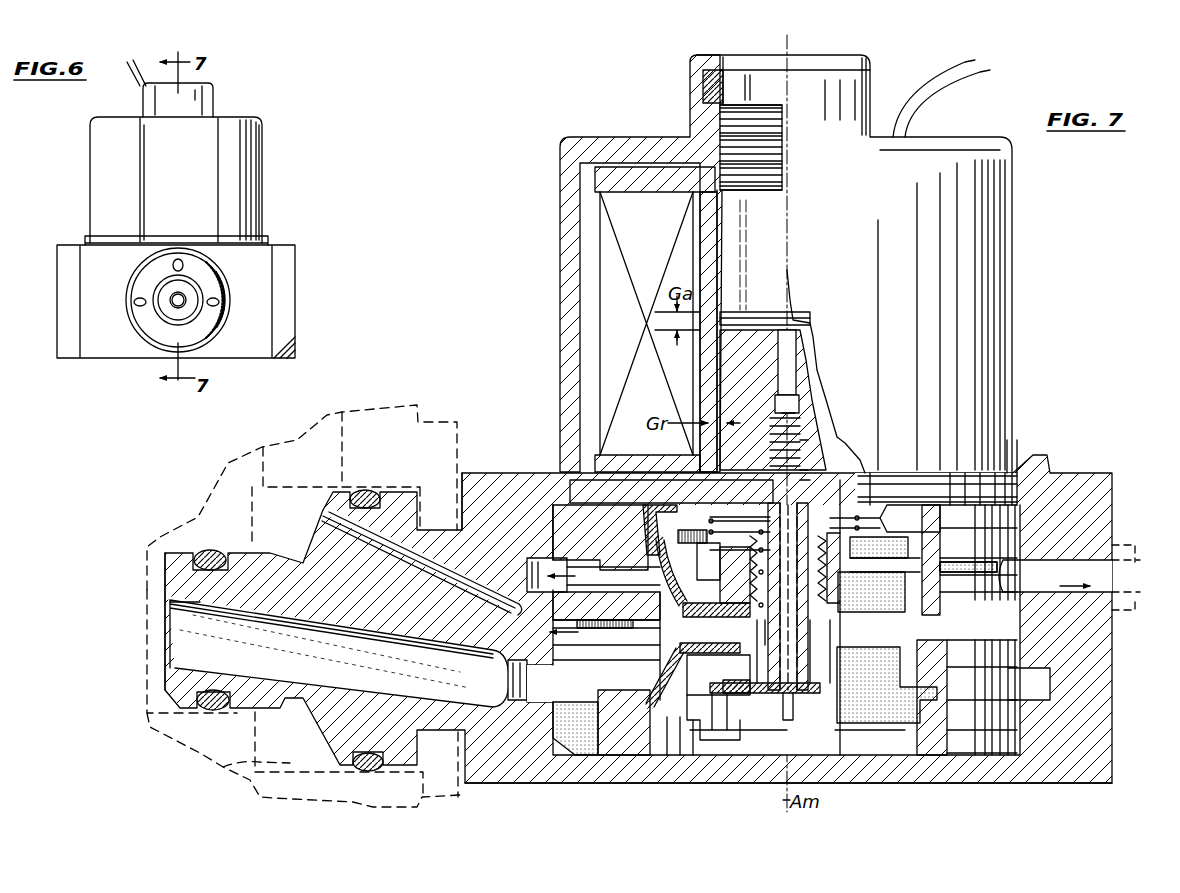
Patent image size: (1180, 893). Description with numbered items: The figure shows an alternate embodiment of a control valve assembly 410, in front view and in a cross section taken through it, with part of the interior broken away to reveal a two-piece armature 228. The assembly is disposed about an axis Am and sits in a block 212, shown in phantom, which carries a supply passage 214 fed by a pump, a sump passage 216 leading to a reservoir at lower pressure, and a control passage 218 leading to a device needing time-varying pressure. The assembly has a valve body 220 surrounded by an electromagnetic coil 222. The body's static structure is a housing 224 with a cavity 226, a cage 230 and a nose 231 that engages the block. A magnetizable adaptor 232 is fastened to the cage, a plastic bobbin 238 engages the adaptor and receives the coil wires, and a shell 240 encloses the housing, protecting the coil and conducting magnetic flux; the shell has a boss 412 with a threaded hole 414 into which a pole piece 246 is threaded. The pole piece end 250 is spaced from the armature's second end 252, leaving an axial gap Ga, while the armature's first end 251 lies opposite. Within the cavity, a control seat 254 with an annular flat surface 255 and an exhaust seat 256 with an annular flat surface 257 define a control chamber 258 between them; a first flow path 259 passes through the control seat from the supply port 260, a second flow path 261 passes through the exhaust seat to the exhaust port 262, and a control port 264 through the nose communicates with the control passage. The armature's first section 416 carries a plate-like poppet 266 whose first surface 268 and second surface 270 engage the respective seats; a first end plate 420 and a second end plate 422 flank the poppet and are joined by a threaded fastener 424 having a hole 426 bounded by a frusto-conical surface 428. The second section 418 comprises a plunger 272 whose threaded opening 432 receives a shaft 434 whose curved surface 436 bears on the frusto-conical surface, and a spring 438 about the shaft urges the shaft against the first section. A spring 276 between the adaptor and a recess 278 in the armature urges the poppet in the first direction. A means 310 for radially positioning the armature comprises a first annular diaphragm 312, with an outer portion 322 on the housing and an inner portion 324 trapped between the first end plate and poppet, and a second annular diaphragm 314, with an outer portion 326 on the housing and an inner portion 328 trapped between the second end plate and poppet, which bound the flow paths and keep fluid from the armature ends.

In FIG. 6, the control valve assembly 410 is at (70, 168).
In FIG. 6, the nose 231 is at (160, 318).
In FIG. 7, the nose 231 is at (165, 690).
In FIG. 6, the supply port 260 is at (176, 298).
In FIG. 7, the supply port 260 is at (172, 634).
In FIG. 6, the control port 264 is at (178, 260).
In FIG. 7, the control port 264 is at (325, 535).
In FIG. 7, the block 212 is at (360, 410).
In FIG. 7, the supply passage 214 is at (158, 572).
In FIG. 7, the sump passage 216 is at (1128, 596).
In FIG. 7, the control passage 218 is at (223, 768).
In FIG. 7, the valve body 220 is at (1013, 300).
In FIG. 7, the electromagnetic coil 222 is at (639, 330).
In FIG. 7, the housing 224 is at (552, 500).
In FIG. 7, the cavity 226 is at (722, 745).
In FIG. 7, the armature 228 is at (822, 436).
In FIG. 7, the cage 230 is at (552, 536).
In FIG. 7, the adaptor 232 is at (671, 491).
In FIG. 7, the bobbin 238 is at (640, 185).
In FIG. 7, the shell 240 is at (588, 148).
In FIG. 7, the pole piece 246 is at (778, 222).
In FIG. 7, the end 250 is at (767, 322).
In FIG. 7, the first end 251 is at (715, 712).
In FIG. 7, the second end 252 is at (773, 400).
In FIG. 7, the control seat 254 is at (605, 648).
In FIG. 7, the annular flat surface 255 is at (886, 688).
In FIG. 7, the exhaust seat 256 is at (593, 587).
In FIG. 7, the annular flat surface 257 is at (900, 580).
In FIG. 7, the control chamber 258 is at (606, 646).
In FIG. 7, the first flow path 259 is at (577, 723).
In FIG. 7, the second flow path 261 is at (1055, 590).
In FIG. 7, the exhaust port 262 is at (1125, 568).
In FIG. 7, the poppet 266 is at (696, 665).
In FIG. 7, the first surface 268 is at (949, 697).
In FIG. 7, the second surface 270 is at (940, 605).
In FIG. 7, the plunger 272 is at (766, 413).
In FIG. 7, the spring 276 is at (910, 518).
In FIG. 7, the recess 278 is at (779, 557).
In FIG. 7, the means for radially positioning the armature 310 is at (917, 508).
In FIG. 7, the first annular diaphragm 312 is at (667, 722).
In FIG. 7, the second annular diaphragm 314 is at (665, 540).
In FIG. 7, the outer portion 322 is at (624, 722).
In FIG. 7, the inner portion 324 is at (720, 675).
In FIG. 7, the outer portion 326 is at (600, 537).
In FIG. 7, the inner portion 328 is at (779, 568).
In FIG. 7, the boss 412 is at (690, 63).
In FIG. 7, the threaded hole 414 is at (716, 118).
In FIG. 7, the first section 416 is at (697, 733).
In FIG. 7, the second section 418 is at (815, 360).
In FIG. 7, the first end plate 420 is at (712, 707).
In FIG. 7, the second end plate 422 is at (703, 578).
In FIG. 7, the threaded fastener 424 is at (790, 705).
In FIG. 7, the hole 426 is at (712, 728).
In FIG. 7, the frusto-conical surface 428 is at (775, 651).
In FIG. 7, the threaded opening 432 is at (804, 455).
In FIG. 7, the shaft 434 is at (802, 470).
In FIG. 7, the curved surface 436 is at (810, 651).
In FIG. 7, the spring 438 is at (805, 496).